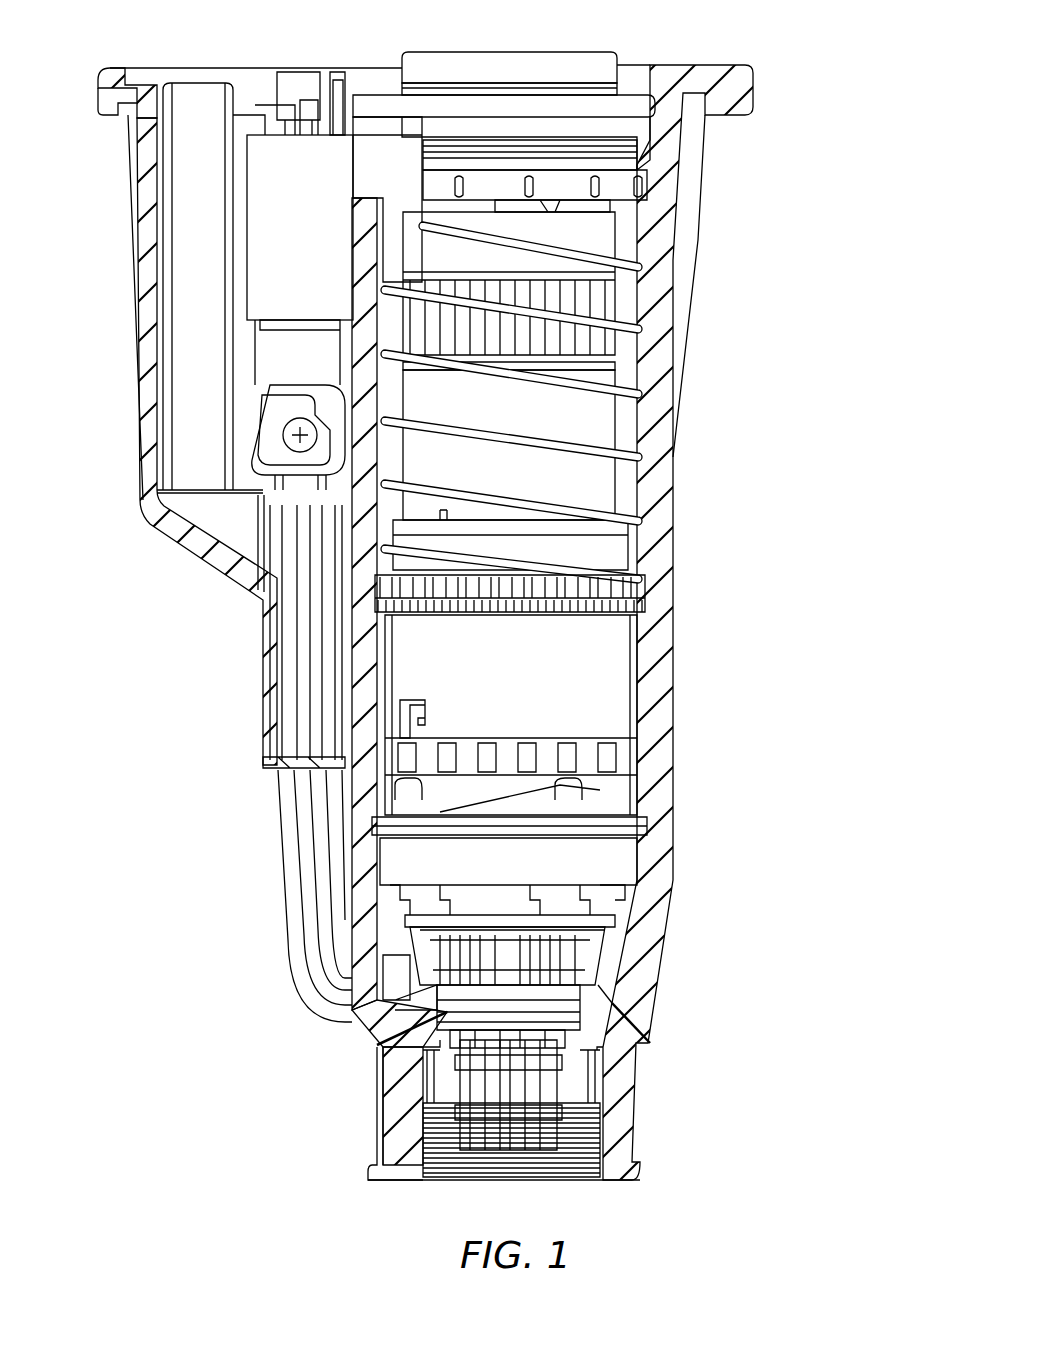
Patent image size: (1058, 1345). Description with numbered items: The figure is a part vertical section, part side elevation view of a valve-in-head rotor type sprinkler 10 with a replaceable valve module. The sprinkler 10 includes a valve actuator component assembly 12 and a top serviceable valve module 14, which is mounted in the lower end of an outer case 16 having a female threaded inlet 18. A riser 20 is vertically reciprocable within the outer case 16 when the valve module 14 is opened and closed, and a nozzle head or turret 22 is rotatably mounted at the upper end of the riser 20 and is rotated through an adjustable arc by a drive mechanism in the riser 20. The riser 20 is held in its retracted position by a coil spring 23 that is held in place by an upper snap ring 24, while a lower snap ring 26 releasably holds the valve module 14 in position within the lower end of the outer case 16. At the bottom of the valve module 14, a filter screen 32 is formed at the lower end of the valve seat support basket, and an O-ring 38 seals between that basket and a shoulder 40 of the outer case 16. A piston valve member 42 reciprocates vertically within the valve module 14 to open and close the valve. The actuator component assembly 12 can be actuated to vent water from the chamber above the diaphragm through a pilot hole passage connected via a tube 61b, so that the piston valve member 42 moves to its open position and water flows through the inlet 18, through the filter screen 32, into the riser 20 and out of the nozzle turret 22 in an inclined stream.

The valve-in-head rotor type sprinkler 10 is at (784, 313).
The valve actuator component assembly 12 is at (262, 245).
The valve module 14 is at (622, 930).
The outer case 16 is at (678, 522).
The female threaded inlet 18 is at (425, 1140).
The riser 20 is at (598, 406).
The nozzle head or turret 22 is at (620, 55).
The coil spring 23 is at (638, 264).
The upper snap ring 24 is at (652, 103).
The lower snap ring 26 is at (640, 830).
The filter screen 32 is at (560, 1080).
The O-ring 38 is at (443, 1010).
The shoulder 40 is at (588, 995).
The piston valve member 42 is at (560, 956).
The tube 61b is at (388, 980).